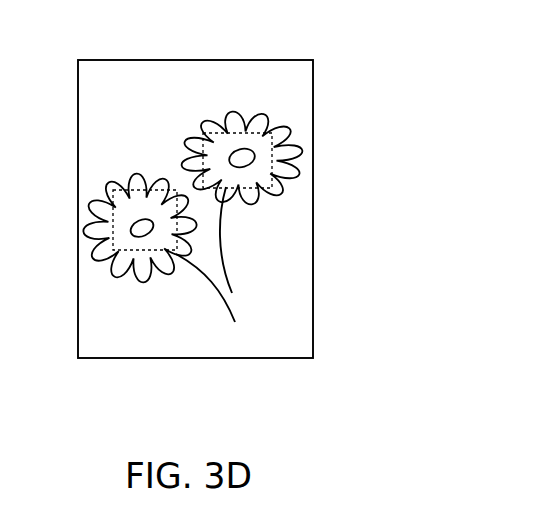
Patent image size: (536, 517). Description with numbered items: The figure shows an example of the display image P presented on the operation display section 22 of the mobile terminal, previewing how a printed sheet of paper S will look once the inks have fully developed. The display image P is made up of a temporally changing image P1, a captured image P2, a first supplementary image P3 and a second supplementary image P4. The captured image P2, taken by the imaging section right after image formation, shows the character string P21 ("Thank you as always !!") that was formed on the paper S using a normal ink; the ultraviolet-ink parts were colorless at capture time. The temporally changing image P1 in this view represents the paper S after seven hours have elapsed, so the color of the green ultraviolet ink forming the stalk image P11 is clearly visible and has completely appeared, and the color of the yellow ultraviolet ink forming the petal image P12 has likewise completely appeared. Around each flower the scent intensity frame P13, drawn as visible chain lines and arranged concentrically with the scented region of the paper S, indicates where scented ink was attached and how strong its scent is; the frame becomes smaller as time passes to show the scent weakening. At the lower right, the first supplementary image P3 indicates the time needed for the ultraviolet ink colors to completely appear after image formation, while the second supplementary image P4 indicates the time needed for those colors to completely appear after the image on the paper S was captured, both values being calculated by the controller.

The paper S is at (95, 125).
The operation display section 22 is at (313, 235).
The display image P is at (195, 209).
The captured image P2 is at (232, 66).
The character string P21 is at (195, 90).
The temporally changing image P1 is at (203, 293).
The stalk image P11 is at (228, 312).
The petal image P12 is at (288, 176).
The scent intensity frame P13 is at (292, 143).
The first supplementary image P3 is at (311, 286).
The second supplementary image P4 is at (311, 322).